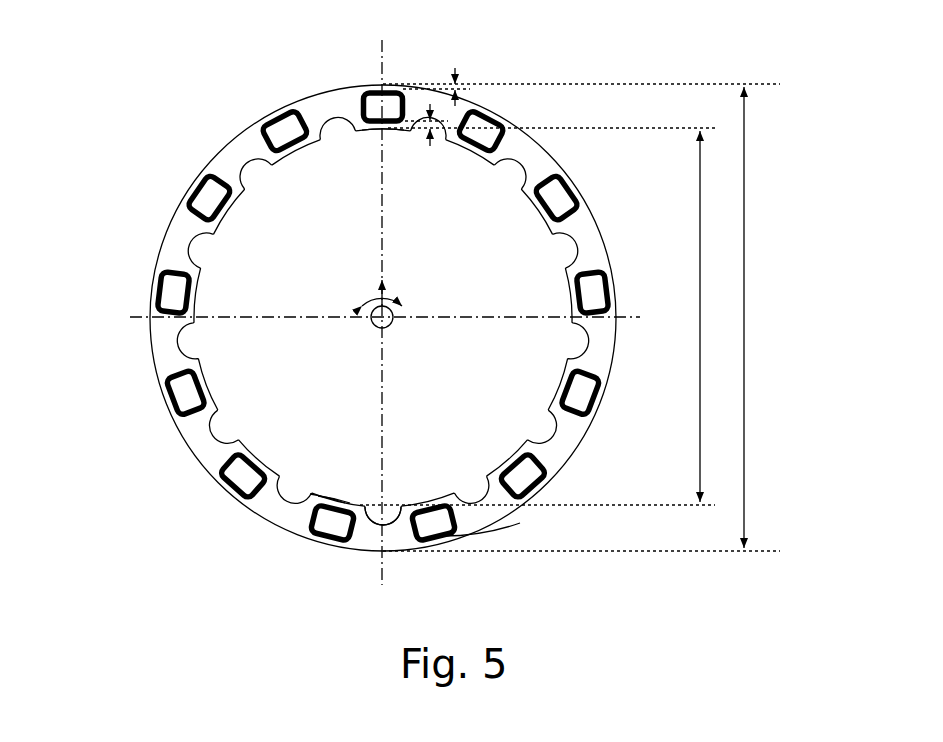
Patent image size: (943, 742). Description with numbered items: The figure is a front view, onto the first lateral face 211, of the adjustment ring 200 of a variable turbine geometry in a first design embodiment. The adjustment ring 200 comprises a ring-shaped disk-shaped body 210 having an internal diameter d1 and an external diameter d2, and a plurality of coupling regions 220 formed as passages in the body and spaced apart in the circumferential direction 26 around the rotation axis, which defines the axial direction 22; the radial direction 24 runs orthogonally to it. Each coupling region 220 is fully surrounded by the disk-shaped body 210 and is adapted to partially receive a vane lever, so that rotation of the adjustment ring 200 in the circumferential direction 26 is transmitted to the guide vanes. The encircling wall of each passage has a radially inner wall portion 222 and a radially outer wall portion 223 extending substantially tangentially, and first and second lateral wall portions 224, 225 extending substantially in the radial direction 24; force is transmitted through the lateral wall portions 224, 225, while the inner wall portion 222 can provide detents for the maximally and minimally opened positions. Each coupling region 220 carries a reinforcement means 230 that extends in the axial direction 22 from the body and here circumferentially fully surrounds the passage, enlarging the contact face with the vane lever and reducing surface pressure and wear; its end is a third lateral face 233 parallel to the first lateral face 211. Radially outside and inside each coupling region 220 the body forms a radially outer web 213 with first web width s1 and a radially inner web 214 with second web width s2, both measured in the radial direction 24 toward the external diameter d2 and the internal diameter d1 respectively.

The adjustment ring 200 is at (379, 319).
The disk-shaped body 210 is at (583, 230).
The first lateral face 211 is at (481, 516).
The radially outer web 213 is at (376, 88).
The radially inner web 214 is at (380, 128).
The coupling region 220 is at (410, 300).
The radially inner wall portion 222 is at (338, 502).
The radially outer wall portion 223 is at (328, 538).
The first lateral wall portion 224 is at (358, 532).
The second lateral wall portion 225 is at (286, 549).
The reinforcement means 230 is at (283, 112).
The third lateral face 233 is at (598, 268).
The axial direction 22 is at (392, 322).
The radial direction 24 is at (366, 283).
The circumferential direction 26 is at (402, 299).
The first web width s1 is at (455, 78).
The second web width s2 is at (433, 138).
The internal diameter d1 is at (537, 316).
The external diameter d2 is at (583, 317).